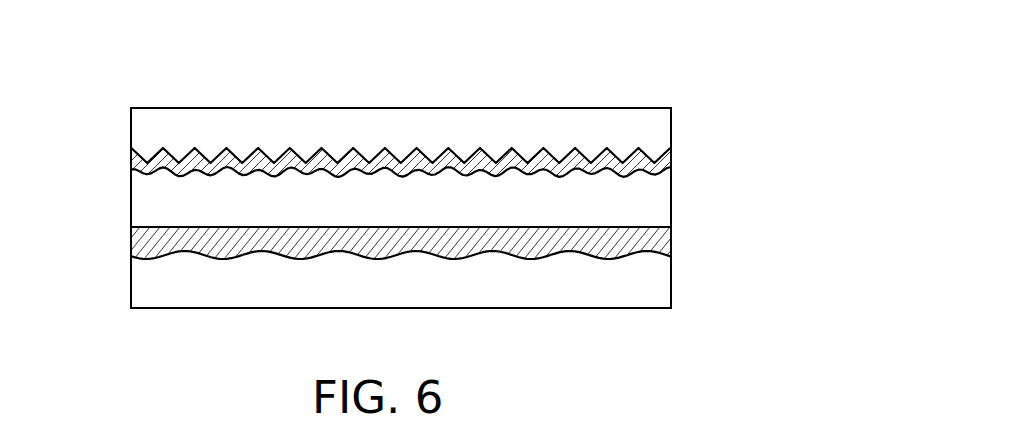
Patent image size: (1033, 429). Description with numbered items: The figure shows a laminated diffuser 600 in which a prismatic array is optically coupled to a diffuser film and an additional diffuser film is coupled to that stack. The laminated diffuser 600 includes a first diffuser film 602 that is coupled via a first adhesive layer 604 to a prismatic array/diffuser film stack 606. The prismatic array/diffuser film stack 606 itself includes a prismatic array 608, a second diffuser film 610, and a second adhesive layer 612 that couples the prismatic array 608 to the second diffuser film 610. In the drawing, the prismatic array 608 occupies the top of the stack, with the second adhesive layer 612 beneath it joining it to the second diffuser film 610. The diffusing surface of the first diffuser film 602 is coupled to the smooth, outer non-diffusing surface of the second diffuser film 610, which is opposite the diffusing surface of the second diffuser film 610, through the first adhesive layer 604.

The laminated diffuser 600 is at (633, 51).
The first diffuser film 602 is at (662, 295).
The first adhesive layer 604 is at (662, 241).
The prismatic array/diffuser film stack 606 is at (118, 104).
The prismatic array 608 is at (662, 117).
The second diffuser film 610 is at (662, 204).
The second adhesive layer 612 is at (142, 162).